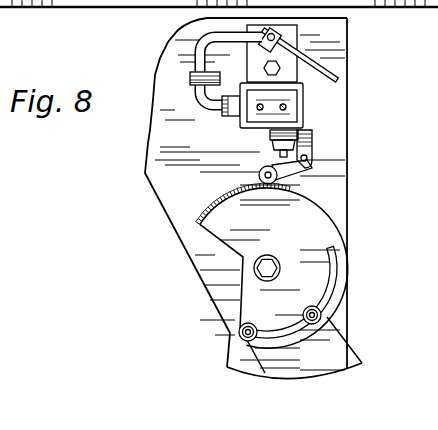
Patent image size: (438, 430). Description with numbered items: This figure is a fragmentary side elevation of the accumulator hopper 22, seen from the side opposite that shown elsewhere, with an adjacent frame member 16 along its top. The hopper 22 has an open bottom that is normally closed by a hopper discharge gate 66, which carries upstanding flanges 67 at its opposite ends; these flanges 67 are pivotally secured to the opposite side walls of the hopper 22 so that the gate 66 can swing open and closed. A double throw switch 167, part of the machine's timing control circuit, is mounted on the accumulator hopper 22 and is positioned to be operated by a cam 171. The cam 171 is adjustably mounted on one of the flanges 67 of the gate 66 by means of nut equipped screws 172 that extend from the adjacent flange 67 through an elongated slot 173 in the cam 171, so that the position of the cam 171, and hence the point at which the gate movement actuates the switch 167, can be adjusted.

The frame member 16 is at (97, 7).
The accumulator hopper 22 is at (146, 149).
The hopper discharge gate 66 is at (233, 372).
The upstanding flanges 67 is at (323, 352).
The double throw switch 167 is at (294, 114).
The cam 171 is at (272, 265).
The nut equipped screws 172 is at (320, 312).
The elongated slot 173 is at (333, 270).